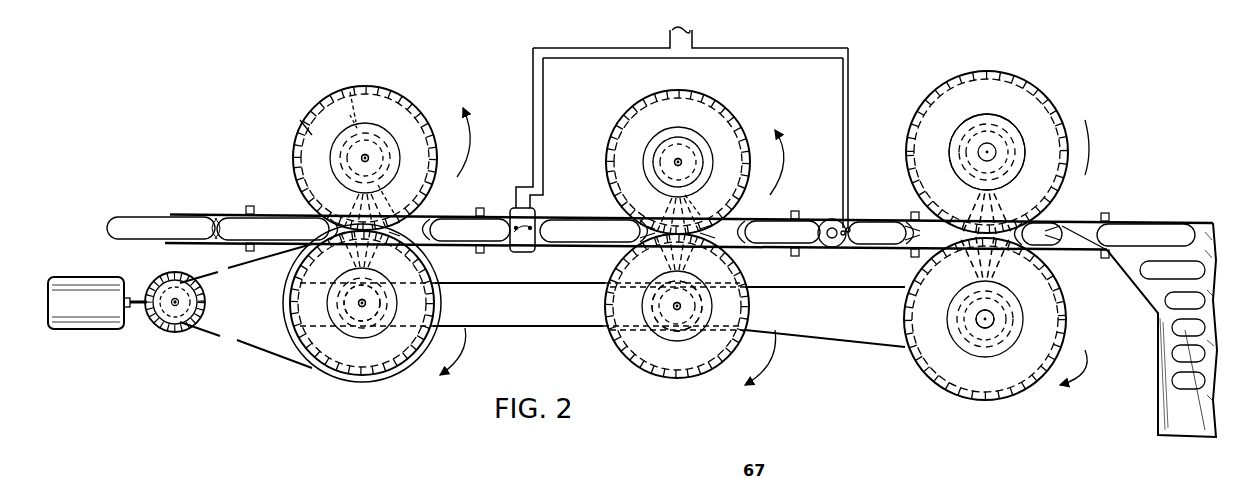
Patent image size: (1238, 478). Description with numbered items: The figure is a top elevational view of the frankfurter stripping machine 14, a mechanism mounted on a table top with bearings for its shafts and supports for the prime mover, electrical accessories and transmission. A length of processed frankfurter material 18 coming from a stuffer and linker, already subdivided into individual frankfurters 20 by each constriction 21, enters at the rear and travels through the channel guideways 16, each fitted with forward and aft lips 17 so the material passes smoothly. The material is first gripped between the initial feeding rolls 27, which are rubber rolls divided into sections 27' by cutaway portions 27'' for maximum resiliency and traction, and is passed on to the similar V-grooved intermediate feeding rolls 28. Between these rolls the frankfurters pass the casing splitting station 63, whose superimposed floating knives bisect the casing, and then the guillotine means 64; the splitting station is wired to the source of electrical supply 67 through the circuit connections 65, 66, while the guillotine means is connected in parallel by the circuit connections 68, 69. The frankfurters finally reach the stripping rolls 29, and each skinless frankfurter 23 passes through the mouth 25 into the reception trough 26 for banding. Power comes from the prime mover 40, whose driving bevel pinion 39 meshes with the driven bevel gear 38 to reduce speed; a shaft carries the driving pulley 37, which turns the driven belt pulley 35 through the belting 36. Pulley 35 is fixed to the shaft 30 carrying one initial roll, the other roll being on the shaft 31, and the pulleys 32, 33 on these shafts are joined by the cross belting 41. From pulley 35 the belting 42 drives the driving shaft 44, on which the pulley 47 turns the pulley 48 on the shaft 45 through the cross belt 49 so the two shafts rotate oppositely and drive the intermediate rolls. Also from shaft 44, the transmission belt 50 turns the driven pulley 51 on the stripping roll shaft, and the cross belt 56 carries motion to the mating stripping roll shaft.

The frankfurter stripping machine 14 is at (908, 97).
The channel guideways 16 is at (236, 213).
The lips 17 is at (420, 247).
The processed frankfurter material 18 is at (128, 215).
The frankfurters 20 is at (268, 226).
The constriction 21 is at (217, 228).
The skinless frankfurter 23 is at (1145, 232).
The mouth 25 is at (1085, 232).
The reception trough 26 is at (1188, 435).
The initial feeding rolls 27 is at (363, 242).
The roll sections 27' is at (296, 188).
The cutaway portions 27'' is at (303, 259).
The intermediate feeding rolls 28 is at (698, 110).
The stripping rolls 29 is at (1015, 92).
The shaft 30 is at (362, 305).
The shaft 31 is at (367, 157).
The pulley 32 is at (378, 316).
The pulley 33 is at (360, 133).
The driven belt pulley 35 is at (410, 365).
The belting 36 is at (262, 355).
The driving pulley 37 is at (170, 308).
The driven bevel gear 38 is at (175, 333).
The driving bevel pinion 39 is at (148, 300).
The prime mover 40 is at (88, 330).
The cross belting 41 is at (394, 199).
The belting 42 is at (508, 330).
The driving shaft 44 is at (680, 307).
The shaft 45 is at (678, 160).
The pulley 47 is at (692, 323).
The pulley 48 is at (700, 148).
The cross belt 49 is at (698, 204).
The transmission belt 50 is at (834, 343).
The driven pulley 51 is at (1010, 323).
The cross belt 56 is at (1012, 163).
The casing splitting station 63 is at (524, 255).
The guillotine means 64 is at (840, 250).
The circuit connection 65 is at (803, 62).
The circuit connection 66 is at (772, 48).
The source of electrical supply 67 is at (686, 28).
The circuit connection 68 is at (850, 62).
The circuit connection 69 is at (846, 110).